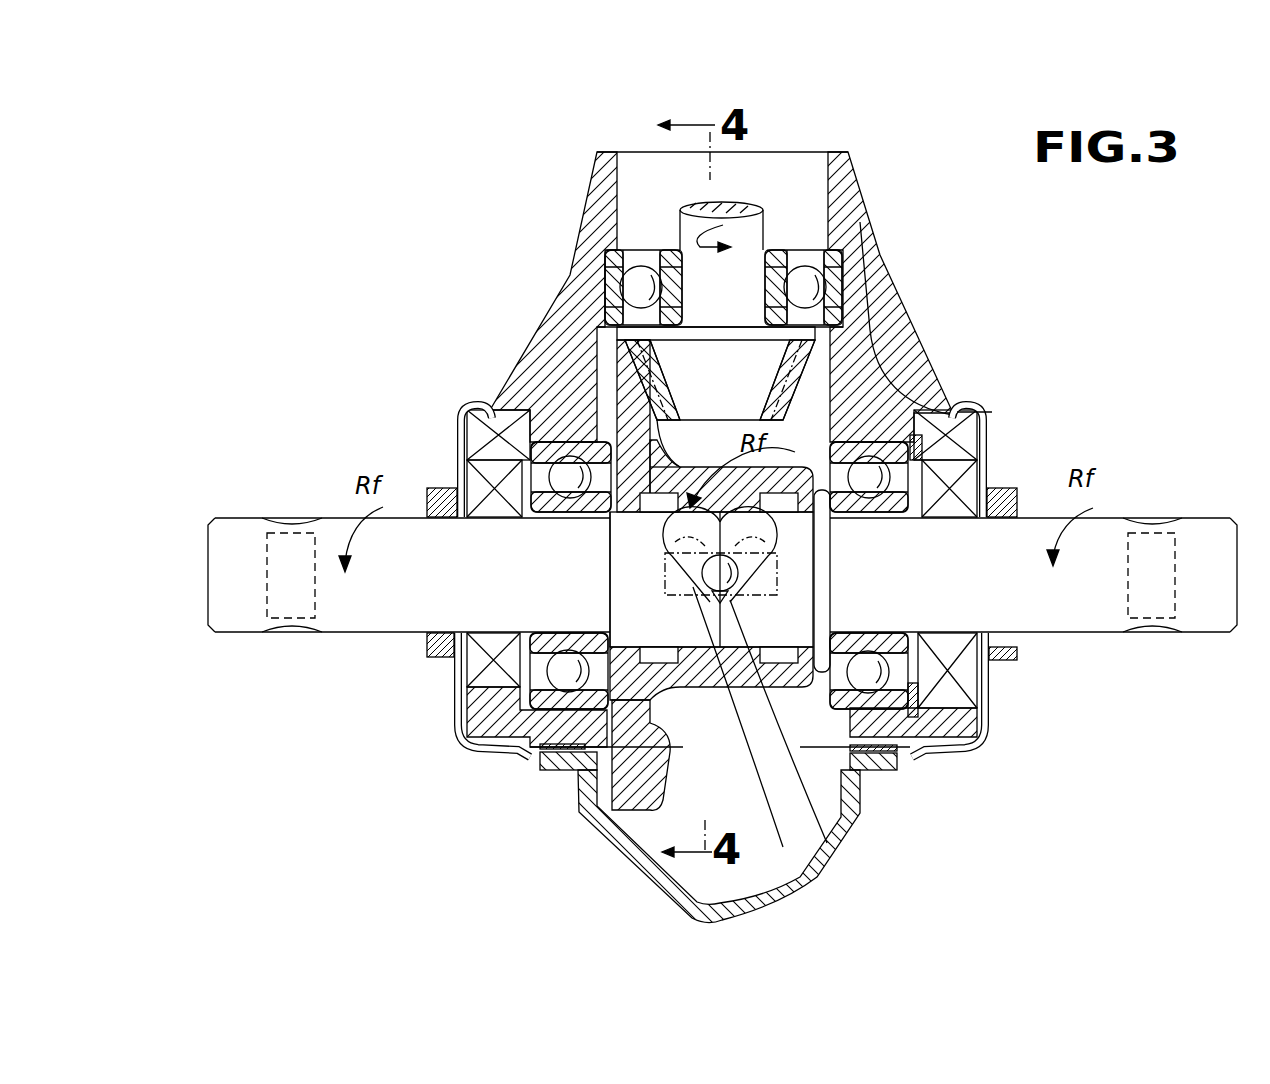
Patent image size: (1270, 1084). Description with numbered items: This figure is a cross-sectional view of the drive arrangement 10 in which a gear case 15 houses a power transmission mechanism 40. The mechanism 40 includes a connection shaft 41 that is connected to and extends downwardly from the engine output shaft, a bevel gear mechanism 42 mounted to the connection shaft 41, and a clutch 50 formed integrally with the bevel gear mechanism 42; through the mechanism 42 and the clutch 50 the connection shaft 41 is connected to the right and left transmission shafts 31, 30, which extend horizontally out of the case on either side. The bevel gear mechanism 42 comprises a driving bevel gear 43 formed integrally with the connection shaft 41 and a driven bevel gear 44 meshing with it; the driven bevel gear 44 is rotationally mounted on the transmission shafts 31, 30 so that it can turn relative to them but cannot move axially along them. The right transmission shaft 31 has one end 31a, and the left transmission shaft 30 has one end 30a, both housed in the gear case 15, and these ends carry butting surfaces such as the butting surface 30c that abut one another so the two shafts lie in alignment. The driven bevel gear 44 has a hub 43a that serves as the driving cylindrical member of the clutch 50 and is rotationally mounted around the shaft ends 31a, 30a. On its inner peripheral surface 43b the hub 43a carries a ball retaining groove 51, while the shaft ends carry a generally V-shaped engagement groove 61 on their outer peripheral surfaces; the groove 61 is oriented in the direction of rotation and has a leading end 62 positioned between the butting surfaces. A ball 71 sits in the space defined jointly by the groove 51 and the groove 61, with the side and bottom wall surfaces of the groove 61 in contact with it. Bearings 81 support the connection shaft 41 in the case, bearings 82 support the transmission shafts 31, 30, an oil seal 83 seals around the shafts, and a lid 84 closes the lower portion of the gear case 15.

The differential device 10 is at (197, 228).
The gear case 15 is at (853, 195).
The left transmission shaft 30 is at (1094, 646).
The right transmission shaft 31 is at (328, 646).
The one end of the left transmission shaft 30a is at (993, 460).
The one end of the right transmission shaft 31a is at (540, 770).
The butting surface 30c is at (858, 828).
The power transmission mechanism 40 is at (643, 218).
The connection shaft 41 is at (703, 268).
The bevel gear mechanism 42 is at (450, 247).
The driving bevel gear 43 is at (630, 398).
The hub 43a is at (640, 540).
The inner peripheral surface 43b is at (657, 514).
The driven bevel gear 44 is at (677, 362).
The clutch 50 is at (897, 437).
The ball retaining groove 51 is at (793, 553).
The engagement groove 61 is at (805, 858).
The leading end 62 is at (872, 772).
The ball 71 is at (740, 583).
The bearing 81 is at (624, 285).
The bearing 82 is at (475, 408).
The oil seal 83 is at (475, 480).
The lid 84 is at (600, 855).